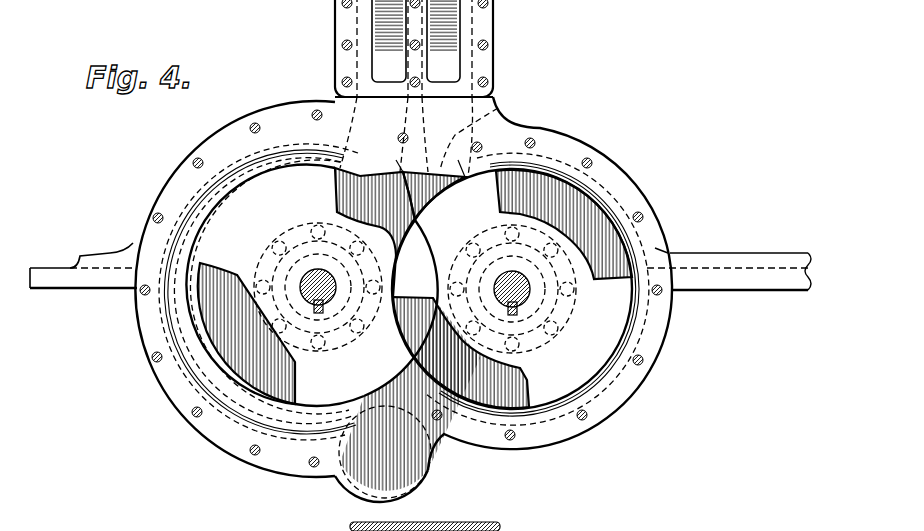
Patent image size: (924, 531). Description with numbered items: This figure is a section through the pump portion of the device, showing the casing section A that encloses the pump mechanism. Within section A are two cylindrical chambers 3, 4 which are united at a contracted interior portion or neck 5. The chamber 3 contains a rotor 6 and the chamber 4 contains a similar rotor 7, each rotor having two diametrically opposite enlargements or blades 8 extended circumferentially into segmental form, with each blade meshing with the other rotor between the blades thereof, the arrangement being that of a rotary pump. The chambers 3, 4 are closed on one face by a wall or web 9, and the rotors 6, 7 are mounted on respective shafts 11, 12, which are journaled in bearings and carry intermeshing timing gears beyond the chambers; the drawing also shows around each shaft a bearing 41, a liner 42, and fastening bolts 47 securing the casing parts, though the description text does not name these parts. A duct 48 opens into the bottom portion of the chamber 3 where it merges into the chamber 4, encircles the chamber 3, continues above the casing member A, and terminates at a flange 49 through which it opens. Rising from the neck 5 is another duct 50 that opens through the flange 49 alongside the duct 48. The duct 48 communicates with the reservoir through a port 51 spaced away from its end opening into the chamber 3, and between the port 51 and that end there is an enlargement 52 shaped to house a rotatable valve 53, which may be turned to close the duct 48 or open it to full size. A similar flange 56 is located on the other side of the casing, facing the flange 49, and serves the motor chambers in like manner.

The casing section A is at (420, 287).
The chamber 3 is at (375, 232).
The chamber 4 is at (564, 224).
The neck 5 is at (430, 190).
The rotor 6 is at (275, 285).
The rotor 7 is at (512, 289).
The blades 8 is at (388, 308).
The wall 9 is at (219, 351).
The shaft 11 is at (303, 292).
The shaft 12 is at (531, 295).
The ball bearing 41 is at (366, 326).
The chamber liner 42 is at (170, 332).
The bolts 47 is at (176, 184).
The duct 48 is at (388, 63).
The flange 49 is at (336, 38).
The duct 50 is at (498, 108).
The port 51 is at (320, 412).
The enlargement 52 is at (424, 470).
The rotatable valve 53 is at (357, 490).
The flange 56 is at (498, 529).